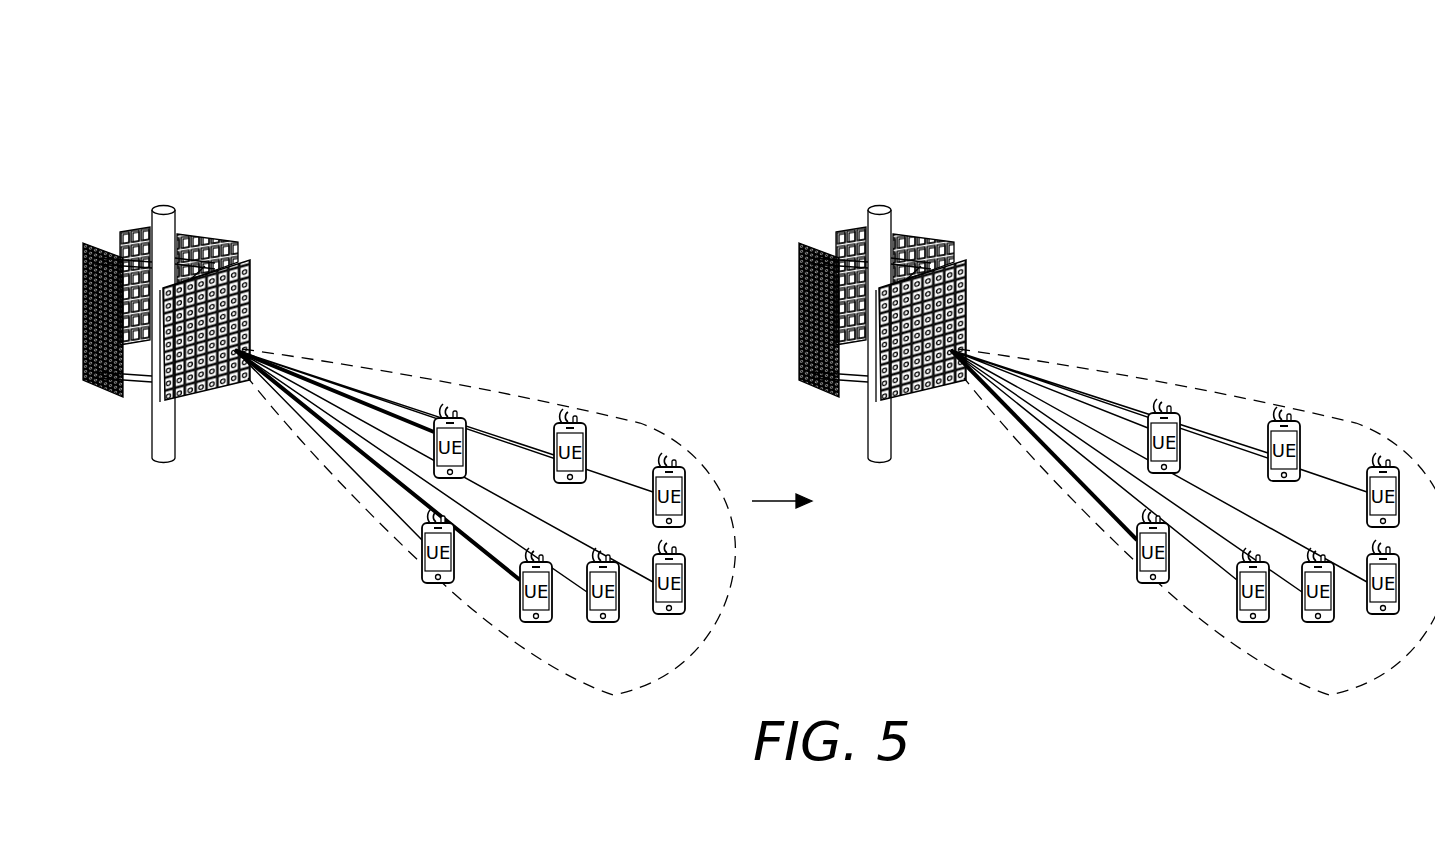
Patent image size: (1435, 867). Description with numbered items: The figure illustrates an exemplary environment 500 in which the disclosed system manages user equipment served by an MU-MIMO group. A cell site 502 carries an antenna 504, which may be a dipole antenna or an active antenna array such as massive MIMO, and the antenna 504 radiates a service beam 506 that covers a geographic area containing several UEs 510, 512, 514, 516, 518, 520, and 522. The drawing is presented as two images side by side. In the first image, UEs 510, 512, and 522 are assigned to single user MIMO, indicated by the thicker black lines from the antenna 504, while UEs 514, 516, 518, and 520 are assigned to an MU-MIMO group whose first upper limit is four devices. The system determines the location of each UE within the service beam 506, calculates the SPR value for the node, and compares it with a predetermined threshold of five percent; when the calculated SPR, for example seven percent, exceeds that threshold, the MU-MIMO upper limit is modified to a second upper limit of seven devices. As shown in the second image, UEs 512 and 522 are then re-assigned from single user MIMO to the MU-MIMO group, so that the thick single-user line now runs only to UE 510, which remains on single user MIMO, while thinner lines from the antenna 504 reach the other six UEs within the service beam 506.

The exemplary environment 500 is at (404, 92).
The cell site 502 is at (228, 212).
The antenna 504 is at (242, 342).
The service beam 506 is at (530, 674).
The UE 510 is at (420, 556).
The UE 512 is at (519, 584).
The UE 514 is at (603, 624).
The UE 516 is at (688, 598).
The UE 518 is at (688, 490).
The UE 520 is at (587, 444).
The UE 522 is at (448, 416).